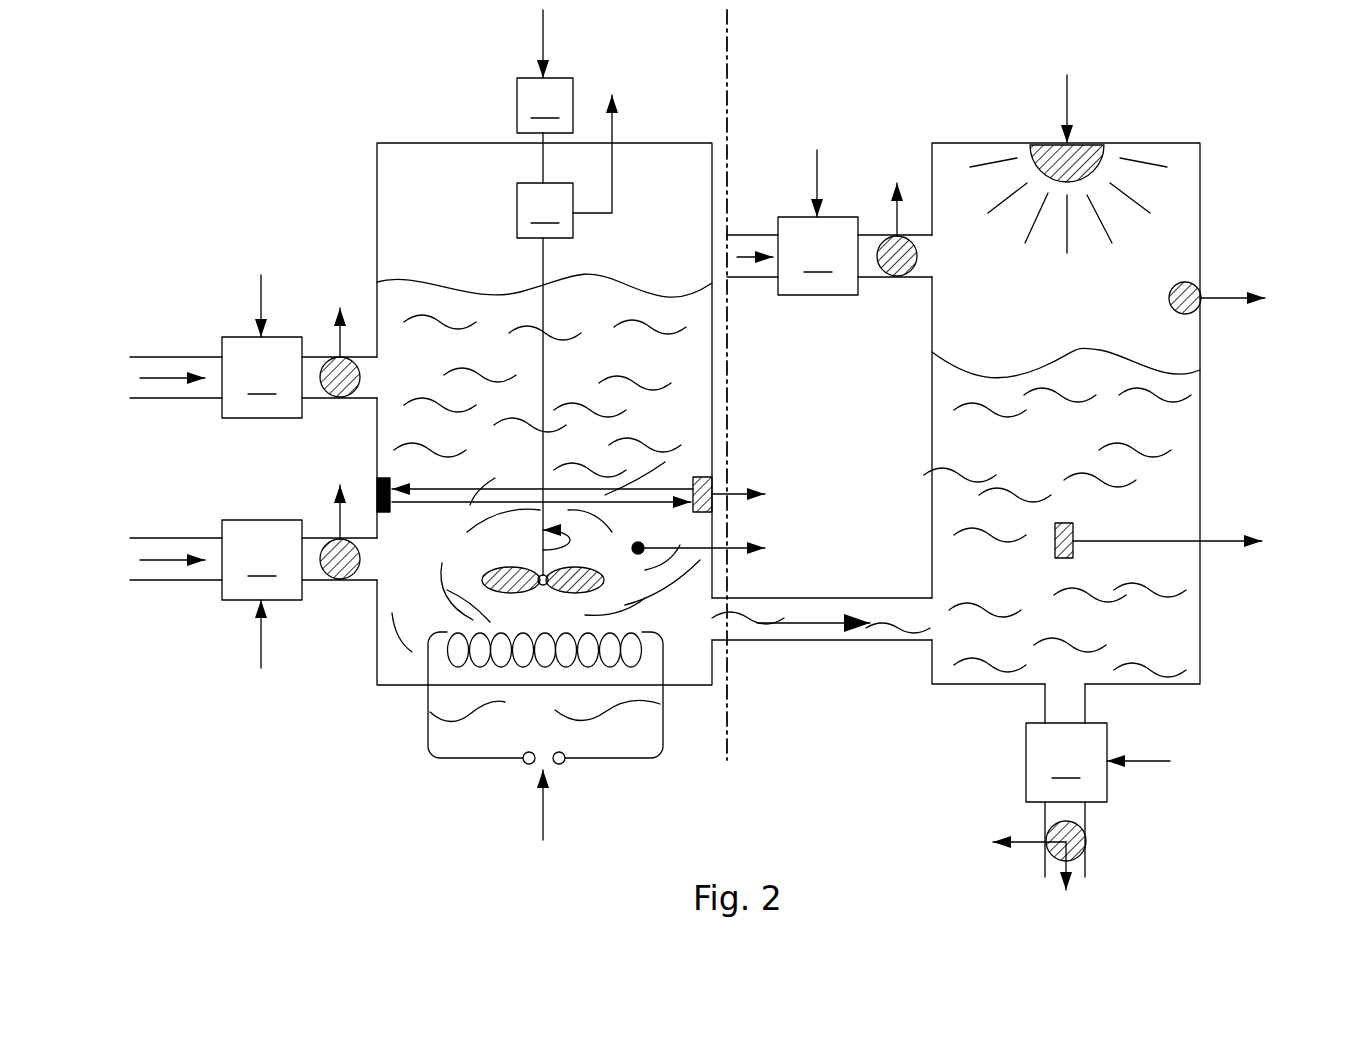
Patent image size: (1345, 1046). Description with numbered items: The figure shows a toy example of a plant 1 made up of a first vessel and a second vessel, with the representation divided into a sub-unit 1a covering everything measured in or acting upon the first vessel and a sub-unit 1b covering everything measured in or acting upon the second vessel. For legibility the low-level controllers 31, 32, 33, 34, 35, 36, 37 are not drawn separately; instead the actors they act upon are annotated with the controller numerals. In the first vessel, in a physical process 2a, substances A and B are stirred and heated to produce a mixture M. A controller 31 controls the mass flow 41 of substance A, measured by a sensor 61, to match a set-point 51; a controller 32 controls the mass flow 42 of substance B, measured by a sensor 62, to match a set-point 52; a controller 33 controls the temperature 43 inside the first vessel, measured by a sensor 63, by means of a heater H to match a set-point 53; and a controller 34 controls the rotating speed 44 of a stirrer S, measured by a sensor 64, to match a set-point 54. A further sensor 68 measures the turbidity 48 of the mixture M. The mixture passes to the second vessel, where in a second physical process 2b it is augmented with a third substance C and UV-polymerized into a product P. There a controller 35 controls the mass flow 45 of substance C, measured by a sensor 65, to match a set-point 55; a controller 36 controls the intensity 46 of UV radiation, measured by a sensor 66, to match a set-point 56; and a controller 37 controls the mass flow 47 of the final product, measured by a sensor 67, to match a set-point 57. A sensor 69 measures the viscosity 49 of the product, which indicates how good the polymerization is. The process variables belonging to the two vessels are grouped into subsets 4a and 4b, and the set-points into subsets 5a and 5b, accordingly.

The plant 1 is at (722, 469).
The sub-unit 1a is at (709, 43).
The sub-unit 1b is at (771, 43).
The physical process 2a is at (380, 143).
The second physical process 2b is at (995, 143).
The subset of process variables 4a is at (550, 308).
The subset of process variables 4b is at (1079, 526).
The subset of set-points 5a is at (413, 428).
The subset of set-points 5b is at (1018, 413).
The controller 31 is at (262, 377).
The controller 32 is at (262, 560).
The controller 33 is at (545, 698).
The controller 34 is at (545, 105).
The controller 35 is at (829, 256).
The controller 36 is at (1110, 178).
The controller 37 is at (1066, 780).
The mass flow of substance A 41 is at (340, 312).
The mass flow of substance B 42 is at (336, 513).
The temperature 43 is at (730, 541).
The rotating speed 44 is at (612, 125).
The mass flow of substance C 45 is at (897, 185).
The intensity of UV radiation 46 is at (1220, 298).
The mass flow of final product 47 is at (1030, 845).
The turbidity 48 is at (730, 488).
The viscosity 49 is at (1218, 545).
The set-point 51 is at (261, 290).
The set-point 52 is at (261, 645).
The set-point 53 is at (543, 792).
The set-point 54 is at (543, 30).
The set-point 55 is at (810, 170).
The set-point 56 is at (1067, 85).
The set-point 57 is at (1162, 760).
The sensor 61 is at (345, 398).
The sensor 62 is at (345, 580).
The sensor 63 is at (641, 553).
The sensor 64 is at (545, 185).
The sensor 65 is at (893, 278).
The sensor 66 is at (1190, 312).
The sensor 67 is at (1085, 845).
The sensor 68 is at (712, 480).
The sensor 69 is at (1073, 528).